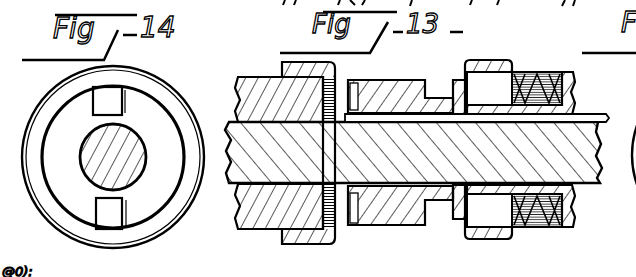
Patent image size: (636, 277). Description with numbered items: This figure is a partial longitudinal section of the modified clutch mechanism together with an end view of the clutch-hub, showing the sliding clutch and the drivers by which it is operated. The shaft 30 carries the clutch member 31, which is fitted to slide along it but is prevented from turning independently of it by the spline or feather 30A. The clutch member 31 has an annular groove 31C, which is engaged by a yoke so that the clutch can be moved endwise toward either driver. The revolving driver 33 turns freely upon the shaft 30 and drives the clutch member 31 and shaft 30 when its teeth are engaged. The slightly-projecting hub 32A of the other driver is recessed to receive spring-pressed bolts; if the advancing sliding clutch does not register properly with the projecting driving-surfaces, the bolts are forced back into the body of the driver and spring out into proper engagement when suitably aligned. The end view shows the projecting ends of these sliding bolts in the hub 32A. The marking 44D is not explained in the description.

In FIG. 14, the shaft 30 is at (113, 157).
In FIG. 13, the shaft 30 is at (413, 152).
In FIG. 13, the spline or feather 30A is at (411, 117).
In FIG. 13, the clutch member 31 is at (385, 90).
In FIG. 13, the annular groove 31C is at (448, 72).
In FIG. 13, the hub 32A is at (275, 97).
In FIG. 14, the revolving driver 33 is at (147, 118).
In FIG. 13, the revolving driver 33 is at (567, 99).
In FIG. 13, the element 44D is at (489, 24).